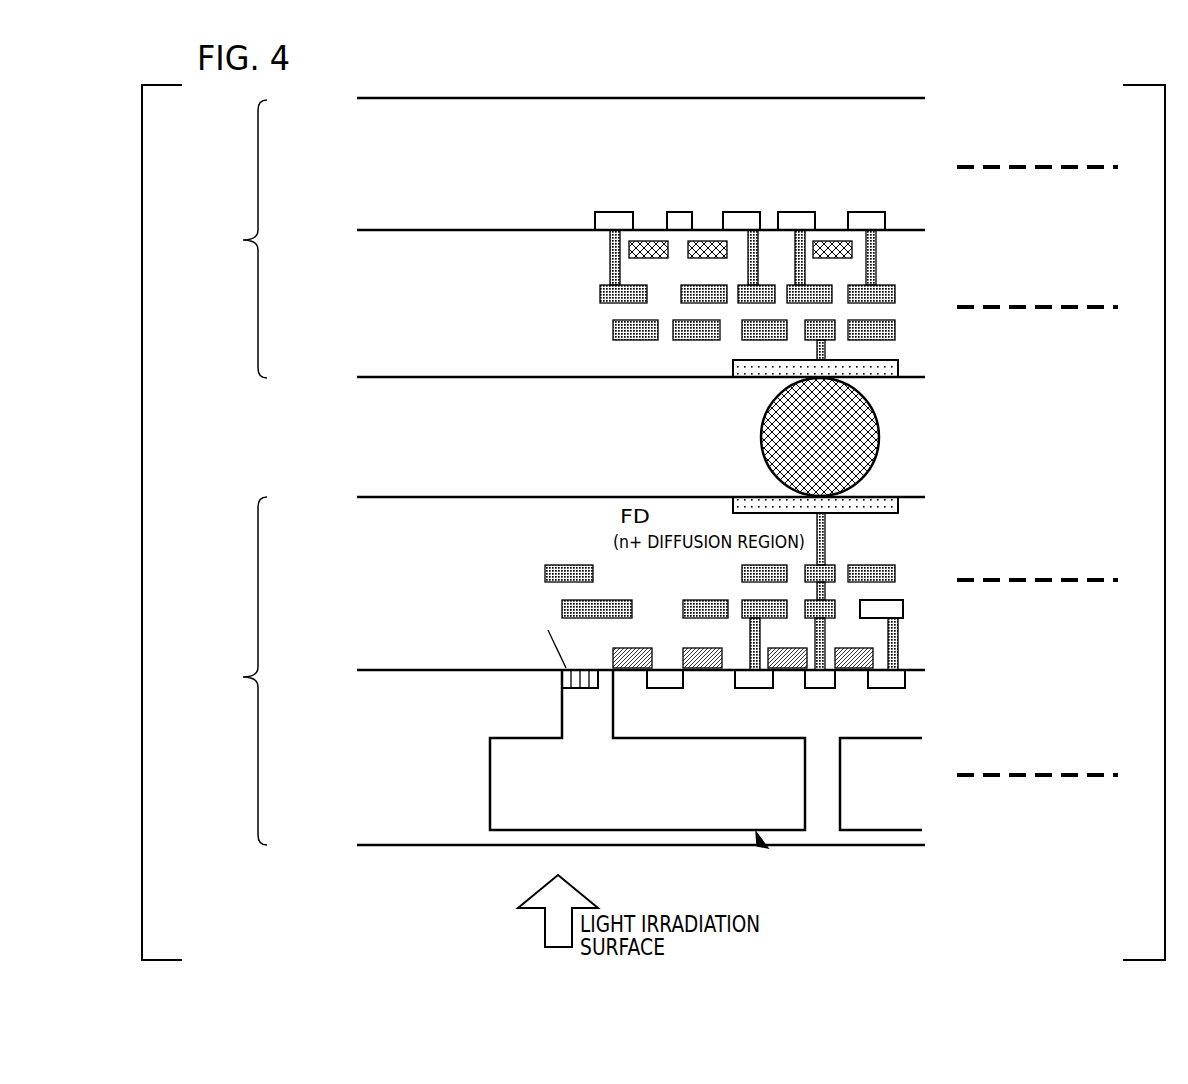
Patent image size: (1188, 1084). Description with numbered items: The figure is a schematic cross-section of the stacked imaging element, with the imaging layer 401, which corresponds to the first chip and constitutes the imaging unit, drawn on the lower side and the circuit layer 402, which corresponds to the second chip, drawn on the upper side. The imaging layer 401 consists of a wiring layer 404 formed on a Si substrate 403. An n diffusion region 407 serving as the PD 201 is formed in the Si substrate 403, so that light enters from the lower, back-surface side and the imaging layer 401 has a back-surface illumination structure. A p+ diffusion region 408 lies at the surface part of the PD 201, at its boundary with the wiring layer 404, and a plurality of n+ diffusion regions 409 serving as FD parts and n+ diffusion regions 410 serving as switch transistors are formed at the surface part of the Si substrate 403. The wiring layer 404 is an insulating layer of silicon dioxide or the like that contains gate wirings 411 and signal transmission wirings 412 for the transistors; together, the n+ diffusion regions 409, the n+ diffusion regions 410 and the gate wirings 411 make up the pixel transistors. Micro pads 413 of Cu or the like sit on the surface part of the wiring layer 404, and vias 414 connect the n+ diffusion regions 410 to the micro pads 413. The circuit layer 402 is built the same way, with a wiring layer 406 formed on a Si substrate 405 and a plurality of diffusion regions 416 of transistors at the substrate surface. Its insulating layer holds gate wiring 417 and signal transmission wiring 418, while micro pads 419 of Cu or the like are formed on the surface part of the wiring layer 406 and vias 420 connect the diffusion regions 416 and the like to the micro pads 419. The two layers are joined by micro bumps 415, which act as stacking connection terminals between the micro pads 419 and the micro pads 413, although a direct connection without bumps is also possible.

The PD 201 is at (762, 845).
The imaging layer 401 is at (223, 671).
The circuit layer 402 is at (223, 239).
The Si substrate 403 is at (367, 786).
The wiring layer 404 is at (367, 556).
The Si substrate 405 is at (367, 151).
The wiring layer 406 is at (367, 322).
The n diffusion region 407 is at (673, 820).
The p+ diffusion region 408 is at (562, 680).
The n+ diffusion regions 409 is at (667, 670).
The n+ diffusion regions 410 is at (826, 689).
The gate wirings 411 is at (873, 658).
The signal transmission wirings 412 is at (558, 563).
The micro pads 413 is at (898, 505).
The vias 414 is at (825, 540).
The micro bumps 415 is at (878, 425).
The diffusion regions 416 is at (860, 212).
The gate wiring 417 is at (855, 250).
The signal transmission wiring 418 is at (613, 330).
The micro pads 419 is at (898, 366).
The vias 420 is at (610, 268).